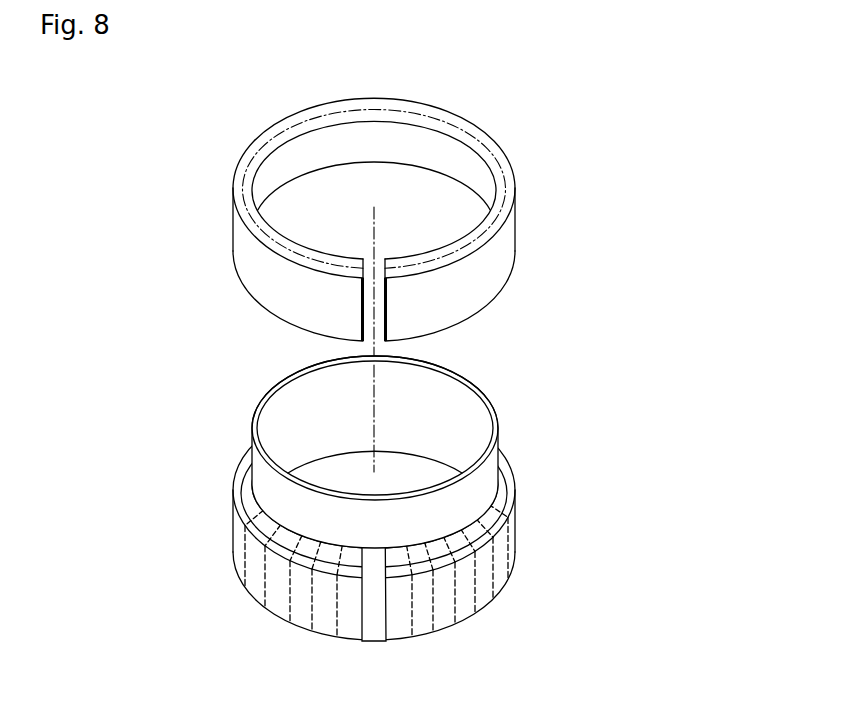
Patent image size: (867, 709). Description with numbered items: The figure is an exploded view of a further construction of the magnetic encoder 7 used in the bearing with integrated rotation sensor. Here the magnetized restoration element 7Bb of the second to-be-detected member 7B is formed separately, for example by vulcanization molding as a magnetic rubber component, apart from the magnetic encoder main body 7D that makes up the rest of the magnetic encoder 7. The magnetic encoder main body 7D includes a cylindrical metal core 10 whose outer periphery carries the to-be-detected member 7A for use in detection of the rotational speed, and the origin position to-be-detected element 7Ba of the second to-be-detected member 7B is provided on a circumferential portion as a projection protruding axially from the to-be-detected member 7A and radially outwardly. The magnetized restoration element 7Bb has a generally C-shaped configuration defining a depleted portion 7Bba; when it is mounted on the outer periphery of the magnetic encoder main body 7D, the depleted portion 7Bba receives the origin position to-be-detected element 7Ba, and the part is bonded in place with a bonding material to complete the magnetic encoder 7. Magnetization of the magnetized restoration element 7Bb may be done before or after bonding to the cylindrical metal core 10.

The magnetic encoder 7 is at (120, 276).
The to-be-detected member for use in detection of the rotational speed 7A is at (302, 620).
The second to-be-detected member 7B is at (700, 432).
The origin position to-be-detected element 7Ba is at (526, 555).
The magnetized restoration element 7Bb is at (483, 287).
The depleted portion 7Bba is at (384, 270).
The magnetic encoder main body 7D is at (218, 526).
The cylindrical metal core 10 is at (288, 415).